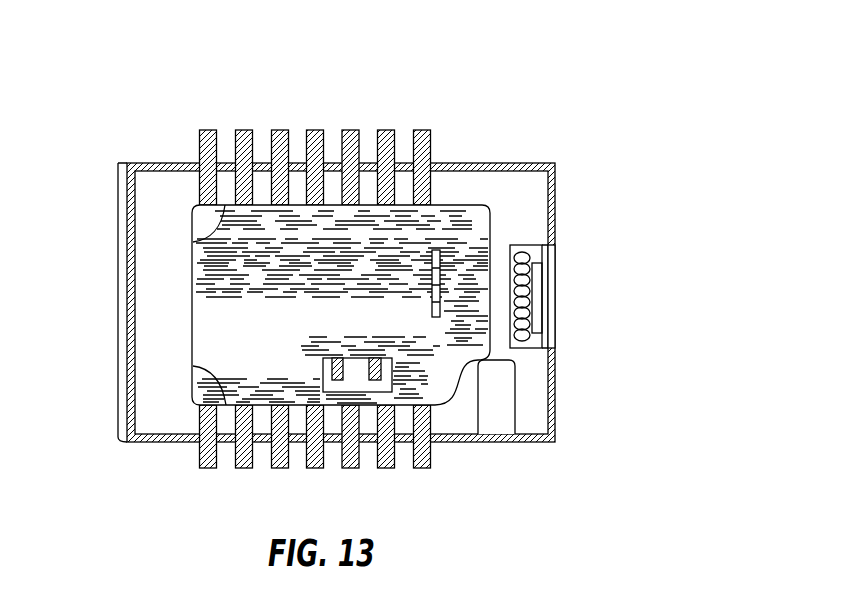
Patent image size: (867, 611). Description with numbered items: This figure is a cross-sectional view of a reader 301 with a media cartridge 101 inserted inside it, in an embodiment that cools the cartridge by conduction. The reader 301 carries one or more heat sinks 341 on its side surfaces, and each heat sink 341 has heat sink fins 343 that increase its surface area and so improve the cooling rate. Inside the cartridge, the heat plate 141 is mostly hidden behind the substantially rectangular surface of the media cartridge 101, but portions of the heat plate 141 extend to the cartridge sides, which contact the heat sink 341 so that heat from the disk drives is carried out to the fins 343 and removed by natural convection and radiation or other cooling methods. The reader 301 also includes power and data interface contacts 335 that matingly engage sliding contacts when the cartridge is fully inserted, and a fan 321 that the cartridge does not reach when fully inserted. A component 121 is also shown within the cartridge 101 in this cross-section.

The media cartridge 101 is at (192, 300).
The component 121 is at (326, 358).
The heat plate 141 is at (193, 242).
The reader 301 is at (613, 84).
The fan 321 is at (550, 280).
The power and data interface contacts 335 is at (517, 398).
The heat sink 341 is at (310, 295).
The heat sink fins 343 is at (381, 130).